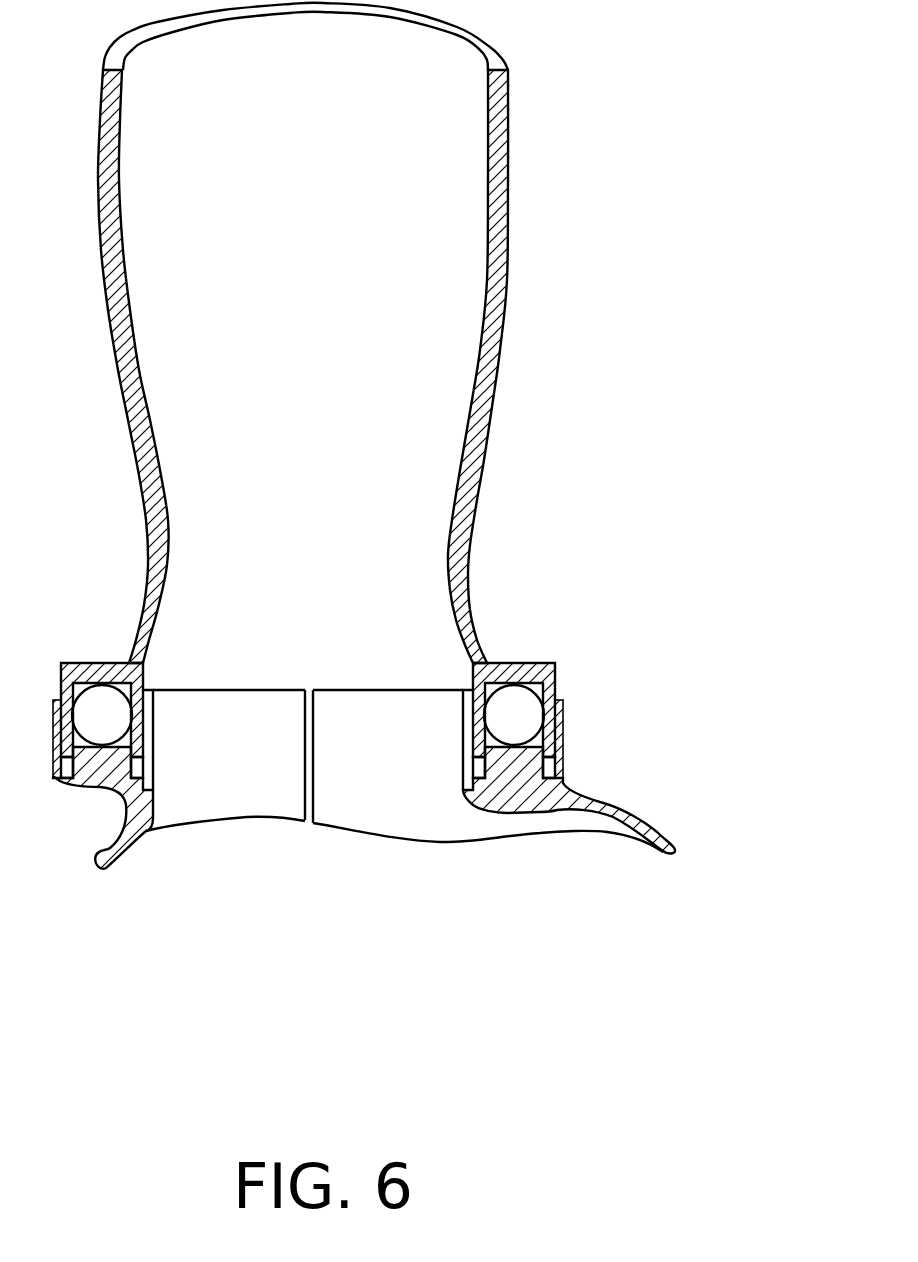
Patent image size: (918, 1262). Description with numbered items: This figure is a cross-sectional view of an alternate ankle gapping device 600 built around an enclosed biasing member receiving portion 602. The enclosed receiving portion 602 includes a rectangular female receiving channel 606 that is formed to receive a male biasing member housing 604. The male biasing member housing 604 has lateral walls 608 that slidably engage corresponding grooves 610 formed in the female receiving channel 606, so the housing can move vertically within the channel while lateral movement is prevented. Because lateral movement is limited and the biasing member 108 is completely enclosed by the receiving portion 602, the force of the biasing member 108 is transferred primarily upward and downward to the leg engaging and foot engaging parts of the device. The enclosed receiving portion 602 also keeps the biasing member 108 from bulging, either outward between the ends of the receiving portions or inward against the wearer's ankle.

The ankle gapping device 600 is at (592, 240).
The enclosed biasing member receiving portion 602 is at (539, 701).
The male biasing member housing 604 is at (598, 652).
The rectangular female receiving channel 606 is at (562, 722).
The lateral walls 608 is at (548, 679).
The grooves 610 is at (548, 767).
The biasing member 108 is at (498, 712).